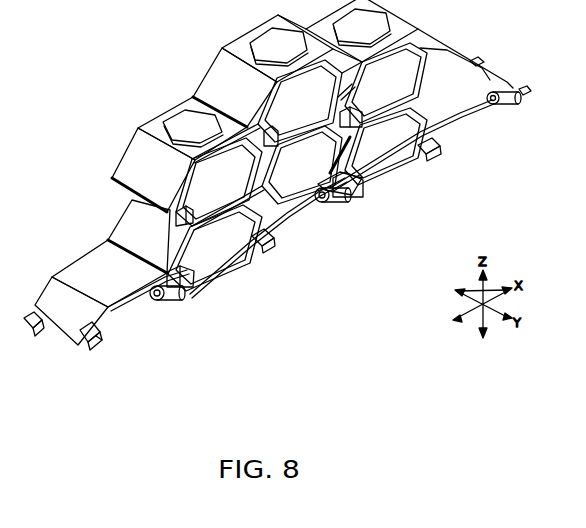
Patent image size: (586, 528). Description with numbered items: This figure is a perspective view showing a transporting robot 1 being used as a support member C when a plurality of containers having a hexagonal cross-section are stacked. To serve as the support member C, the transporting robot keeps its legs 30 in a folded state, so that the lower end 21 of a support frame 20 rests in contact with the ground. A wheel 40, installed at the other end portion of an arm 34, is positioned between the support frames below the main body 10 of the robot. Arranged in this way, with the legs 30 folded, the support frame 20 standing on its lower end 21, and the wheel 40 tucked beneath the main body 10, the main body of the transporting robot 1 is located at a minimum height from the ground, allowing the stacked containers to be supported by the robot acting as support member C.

The variable shape assembly 1 is at (269, 195).
The main body 10 is at (110, 263).
The support frame 20 is at (50, 295).
The lower end 21 is at (48, 343).
The legs 30 is at (190, 308).
The arm 34 is at (97, 340).
The wheel 40 is at (157, 297).
The support member C is at (72, 245).